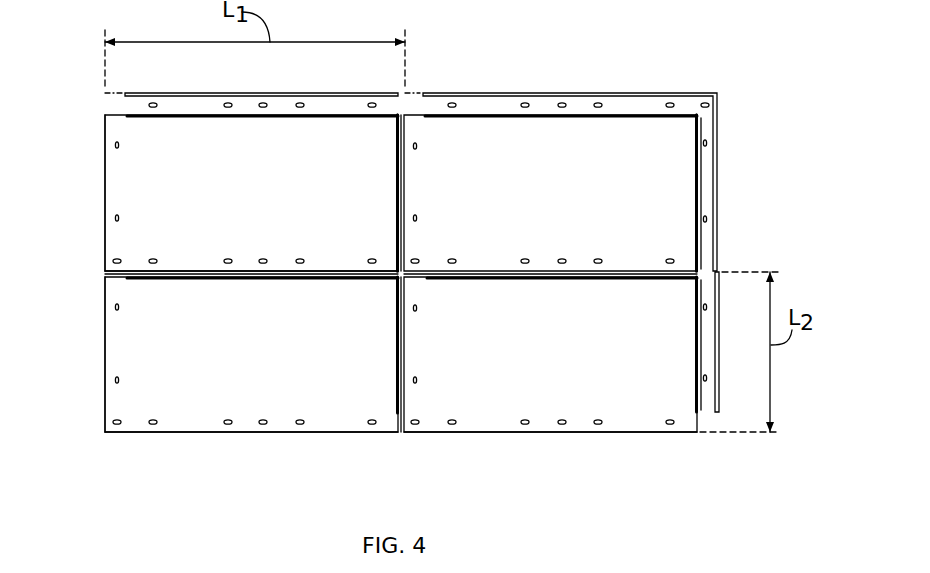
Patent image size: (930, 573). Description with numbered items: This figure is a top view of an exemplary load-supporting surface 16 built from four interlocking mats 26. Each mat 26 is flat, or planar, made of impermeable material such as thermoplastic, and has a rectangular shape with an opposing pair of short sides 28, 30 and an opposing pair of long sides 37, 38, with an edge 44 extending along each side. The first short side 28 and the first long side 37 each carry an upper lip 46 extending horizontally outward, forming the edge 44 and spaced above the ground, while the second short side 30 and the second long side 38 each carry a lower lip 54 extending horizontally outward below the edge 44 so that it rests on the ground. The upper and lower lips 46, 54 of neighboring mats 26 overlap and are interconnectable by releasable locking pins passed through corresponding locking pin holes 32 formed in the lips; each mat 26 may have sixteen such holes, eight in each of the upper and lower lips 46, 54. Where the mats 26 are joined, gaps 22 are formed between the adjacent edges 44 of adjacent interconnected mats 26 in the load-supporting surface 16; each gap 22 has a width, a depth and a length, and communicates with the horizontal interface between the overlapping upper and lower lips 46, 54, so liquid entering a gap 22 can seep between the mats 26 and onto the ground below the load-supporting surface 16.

The load-supporting surface 16 is at (698, 48).
The gap 22 is at (404, 138).
The mat 26 is at (261, 210).
The first short side 28 is at (86, 200).
The second short side 30 is at (383, 212).
The locking pin holes 32 is at (263, 108).
The first long side 37 is at (248, 264).
The second long side 38 is at (333, 85).
The edge 44 is at (395, 192).
The upper lip 46 is at (113, 170).
The lower lip 54 is at (188, 100).